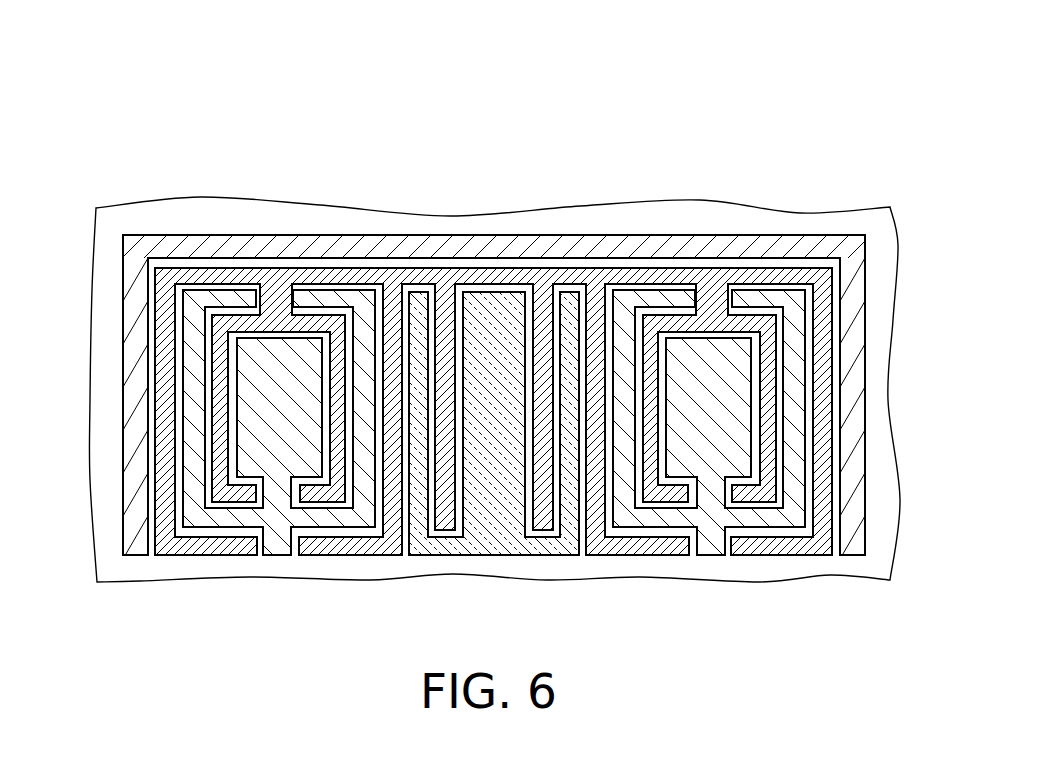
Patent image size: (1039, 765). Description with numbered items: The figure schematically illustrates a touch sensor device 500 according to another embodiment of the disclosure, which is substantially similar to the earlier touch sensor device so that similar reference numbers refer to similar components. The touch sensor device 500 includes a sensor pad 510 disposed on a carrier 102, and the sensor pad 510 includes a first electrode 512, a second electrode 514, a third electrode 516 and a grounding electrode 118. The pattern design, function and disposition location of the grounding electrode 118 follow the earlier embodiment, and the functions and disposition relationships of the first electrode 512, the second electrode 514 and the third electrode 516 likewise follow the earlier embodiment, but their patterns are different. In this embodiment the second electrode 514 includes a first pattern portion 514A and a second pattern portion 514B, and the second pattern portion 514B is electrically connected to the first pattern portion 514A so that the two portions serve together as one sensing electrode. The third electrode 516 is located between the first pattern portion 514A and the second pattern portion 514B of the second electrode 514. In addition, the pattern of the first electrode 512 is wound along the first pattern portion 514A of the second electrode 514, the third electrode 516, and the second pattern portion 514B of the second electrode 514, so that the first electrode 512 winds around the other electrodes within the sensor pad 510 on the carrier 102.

The carrier 102 is at (880, 500).
The grounding electrode 118 is at (188, 237).
The touch sensor device 500 is at (1000, 658).
The sensor pad 510 is at (160, 82).
The first electrode 512 is at (223, 280).
The second electrode 514 is at (494, 324).
The first pattern portion 514A is at (277, 362).
The second pattern portion 514B is at (712, 362).
The third electrode 516 is at (495, 322).